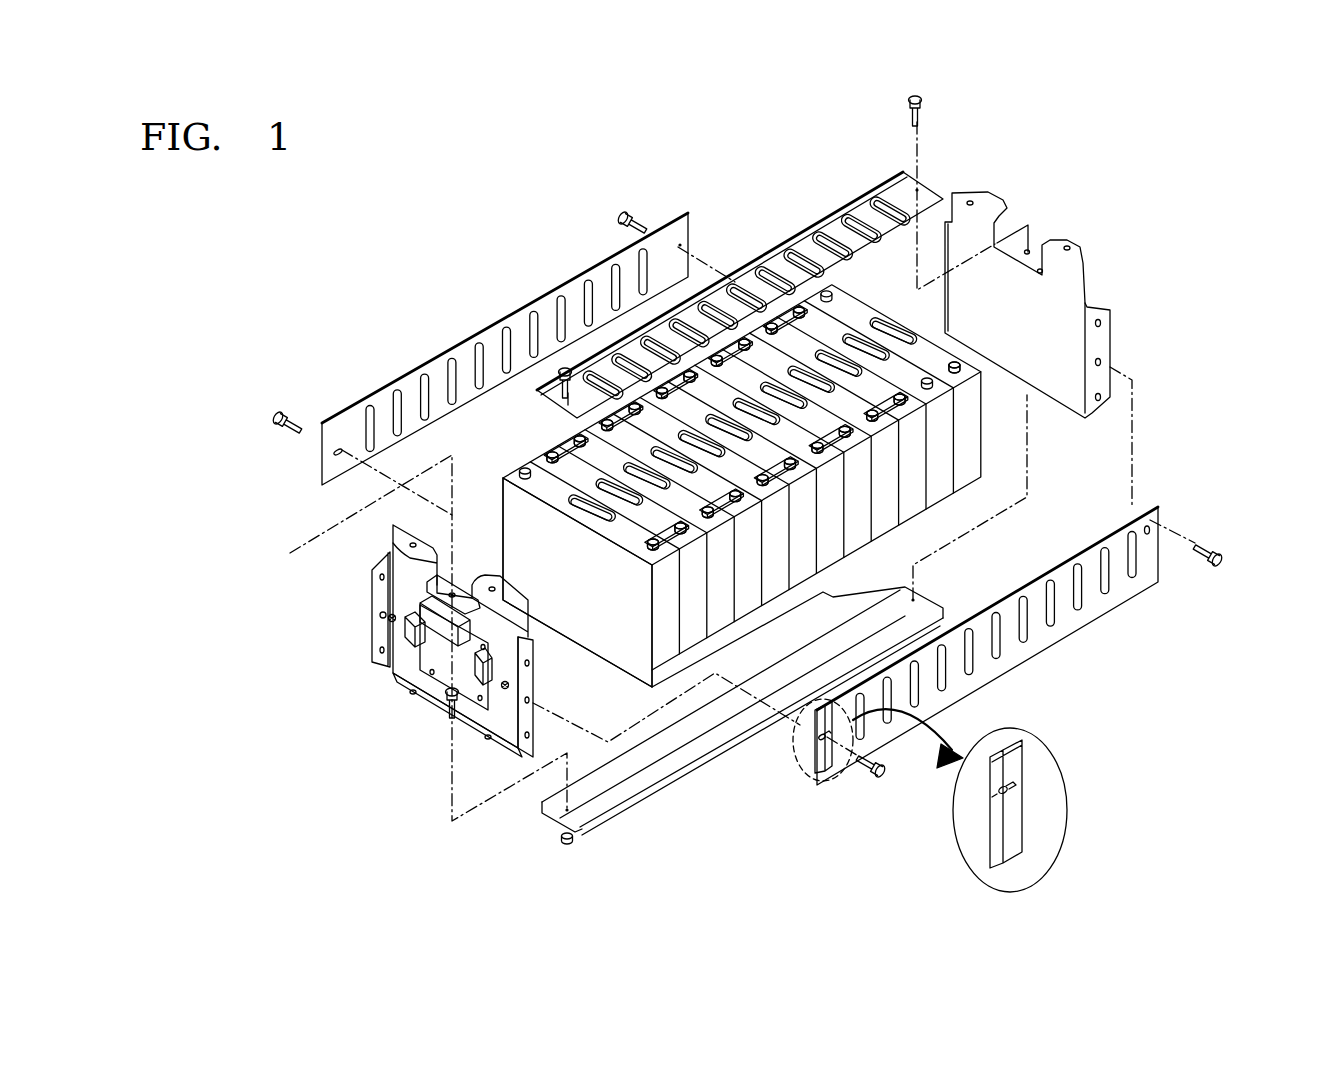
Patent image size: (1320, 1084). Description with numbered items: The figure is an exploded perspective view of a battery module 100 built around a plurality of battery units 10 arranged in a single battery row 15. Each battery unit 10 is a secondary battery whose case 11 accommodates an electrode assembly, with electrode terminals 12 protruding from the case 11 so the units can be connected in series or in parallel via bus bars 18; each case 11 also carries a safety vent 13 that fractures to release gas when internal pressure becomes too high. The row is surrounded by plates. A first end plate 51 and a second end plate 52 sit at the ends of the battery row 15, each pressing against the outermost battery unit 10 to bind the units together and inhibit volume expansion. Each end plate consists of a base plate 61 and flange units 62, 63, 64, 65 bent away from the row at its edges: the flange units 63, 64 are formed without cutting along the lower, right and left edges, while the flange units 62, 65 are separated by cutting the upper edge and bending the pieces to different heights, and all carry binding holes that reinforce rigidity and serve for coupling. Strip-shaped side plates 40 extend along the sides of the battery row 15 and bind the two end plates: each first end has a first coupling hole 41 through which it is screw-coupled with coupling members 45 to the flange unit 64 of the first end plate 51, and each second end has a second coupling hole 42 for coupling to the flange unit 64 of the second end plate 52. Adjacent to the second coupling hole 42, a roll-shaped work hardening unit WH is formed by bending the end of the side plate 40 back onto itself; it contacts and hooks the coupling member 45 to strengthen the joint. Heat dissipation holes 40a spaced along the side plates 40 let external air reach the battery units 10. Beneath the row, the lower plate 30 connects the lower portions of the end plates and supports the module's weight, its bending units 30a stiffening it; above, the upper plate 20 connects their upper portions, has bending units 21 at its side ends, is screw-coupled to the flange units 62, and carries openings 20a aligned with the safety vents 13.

The battery module 100 is at (1178, 205).
The battery unit 10 is at (746, 486).
The case 11 is at (505, 483).
The electrode terminal 12 is at (553, 442).
The safety vent 13 is at (579, 518).
The battery row 15 is at (797, 637).
The bus bar 18 is at (953, 378).
The upper plate 20 is at (740, 257).
The opening 20a is at (820, 228).
The bending unit 21 is at (896, 196).
The lower plate 30 is at (724, 731).
The bending unit 30a is at (627, 808).
The side plate 40 is at (743, 499).
The heat dissipation hole 40a is at (536, 318).
The first coupling hole 41 is at (1143, 534).
The second coupling hole 42 is at (824, 762).
The coupling member 45 is at (882, 775).
The first end plate 51 is at (770, 463).
The second end plate 52 is at (426, 681).
The base plate 61 is at (405, 657).
The flange unit 62 is at (1043, 248).
The flange unit 63 is at (452, 718).
The flange unit 64 is at (1110, 320).
The flange unit 65 is at (1000, 203).
The work hardening unit WH is at (919, 796).